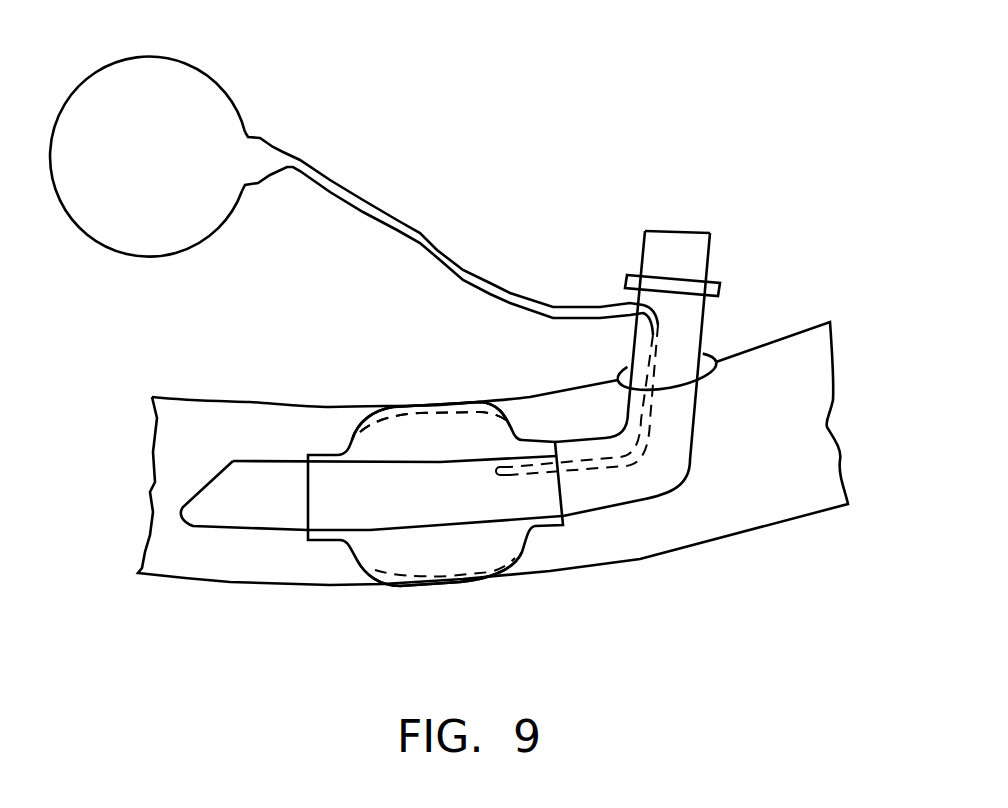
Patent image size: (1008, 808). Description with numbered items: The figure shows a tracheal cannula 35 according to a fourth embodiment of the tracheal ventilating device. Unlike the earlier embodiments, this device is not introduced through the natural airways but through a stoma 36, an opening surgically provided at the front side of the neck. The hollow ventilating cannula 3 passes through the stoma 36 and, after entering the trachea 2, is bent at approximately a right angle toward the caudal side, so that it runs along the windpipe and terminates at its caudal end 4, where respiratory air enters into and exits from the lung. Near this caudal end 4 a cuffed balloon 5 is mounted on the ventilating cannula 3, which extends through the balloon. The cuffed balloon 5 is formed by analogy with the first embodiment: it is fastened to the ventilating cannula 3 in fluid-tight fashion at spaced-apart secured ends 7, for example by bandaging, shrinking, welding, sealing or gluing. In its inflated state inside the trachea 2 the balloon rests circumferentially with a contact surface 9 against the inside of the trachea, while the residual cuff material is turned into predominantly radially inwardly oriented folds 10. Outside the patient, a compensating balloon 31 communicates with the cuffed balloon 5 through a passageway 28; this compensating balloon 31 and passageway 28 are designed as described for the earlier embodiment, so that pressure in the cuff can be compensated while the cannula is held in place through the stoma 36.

The trachea 2 is at (263, 406).
The ventilating cannula 3 is at (665, 463).
The caudal end 4 is at (232, 513).
The cuffed balloon 5 is at (377, 585).
The secured end 7 is at (328, 455).
The contact surface 9 is at (385, 407).
The folds 10 is at (445, 410).
The passageway 28 is at (432, 239).
The compensating balloon 31 is at (205, 98).
The tracheal cannula 35 is at (688, 257).
The stoma 36 is at (706, 348).